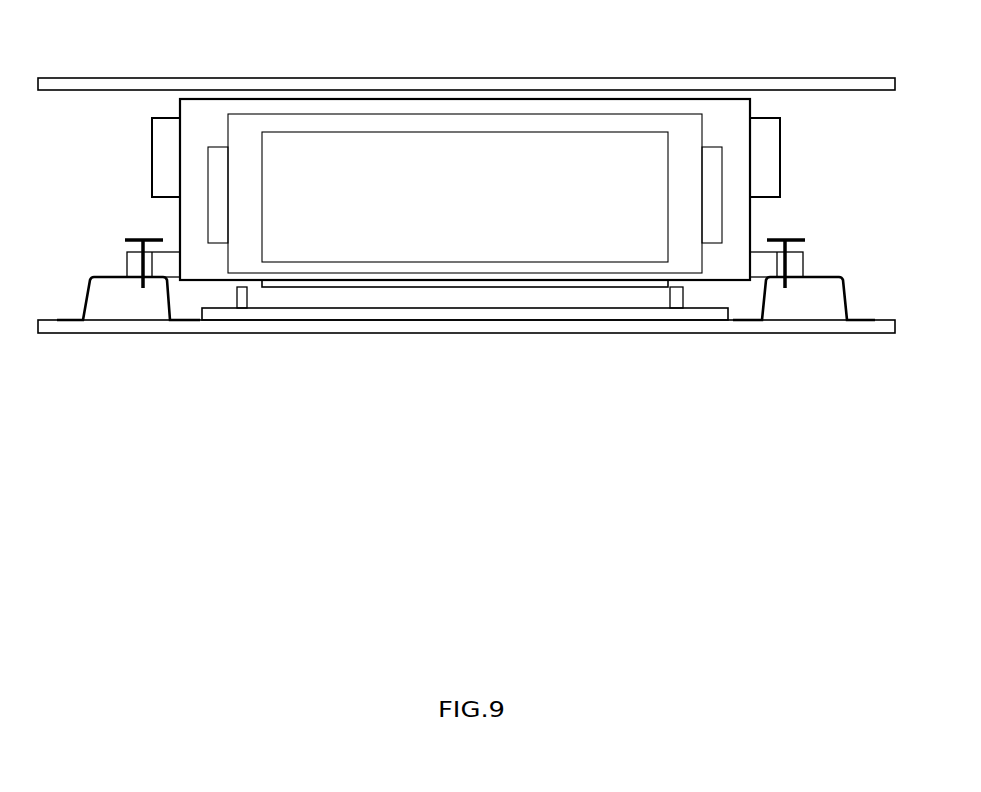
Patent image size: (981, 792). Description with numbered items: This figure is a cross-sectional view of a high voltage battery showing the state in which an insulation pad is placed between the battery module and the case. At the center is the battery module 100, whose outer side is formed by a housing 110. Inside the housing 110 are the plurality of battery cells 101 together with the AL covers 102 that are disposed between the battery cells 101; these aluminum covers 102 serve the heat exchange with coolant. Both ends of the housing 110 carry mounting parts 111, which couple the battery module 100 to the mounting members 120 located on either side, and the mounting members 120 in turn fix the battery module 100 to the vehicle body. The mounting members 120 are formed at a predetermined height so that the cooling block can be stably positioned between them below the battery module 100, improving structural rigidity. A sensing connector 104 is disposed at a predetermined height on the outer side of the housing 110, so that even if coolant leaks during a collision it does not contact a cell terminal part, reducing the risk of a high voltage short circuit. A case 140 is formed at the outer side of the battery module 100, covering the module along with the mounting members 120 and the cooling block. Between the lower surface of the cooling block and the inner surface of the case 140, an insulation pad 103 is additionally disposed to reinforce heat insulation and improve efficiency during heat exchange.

The battery module 100 is at (465, 285).
The battery cells 101 is at (242, 255).
The AL covers 102 is at (294, 280).
The insulation pad 103 is at (717, 315).
The sensing connector 104 is at (780, 155).
The housing 110 is at (465, 99).
The mounting parts 111 is at (805, 262).
The mounting members 120 is at (847, 295).
The case 140 is at (108, 78).